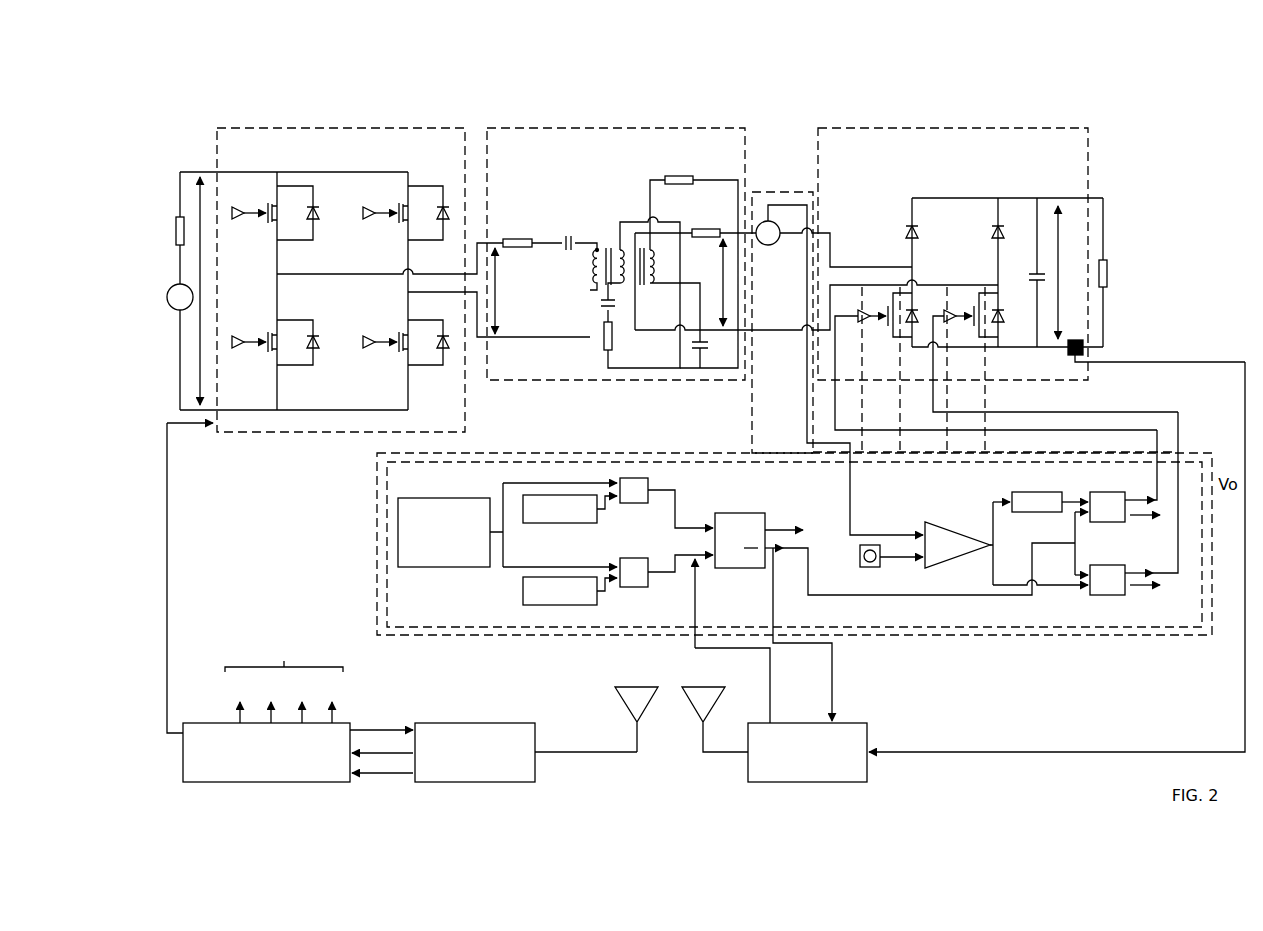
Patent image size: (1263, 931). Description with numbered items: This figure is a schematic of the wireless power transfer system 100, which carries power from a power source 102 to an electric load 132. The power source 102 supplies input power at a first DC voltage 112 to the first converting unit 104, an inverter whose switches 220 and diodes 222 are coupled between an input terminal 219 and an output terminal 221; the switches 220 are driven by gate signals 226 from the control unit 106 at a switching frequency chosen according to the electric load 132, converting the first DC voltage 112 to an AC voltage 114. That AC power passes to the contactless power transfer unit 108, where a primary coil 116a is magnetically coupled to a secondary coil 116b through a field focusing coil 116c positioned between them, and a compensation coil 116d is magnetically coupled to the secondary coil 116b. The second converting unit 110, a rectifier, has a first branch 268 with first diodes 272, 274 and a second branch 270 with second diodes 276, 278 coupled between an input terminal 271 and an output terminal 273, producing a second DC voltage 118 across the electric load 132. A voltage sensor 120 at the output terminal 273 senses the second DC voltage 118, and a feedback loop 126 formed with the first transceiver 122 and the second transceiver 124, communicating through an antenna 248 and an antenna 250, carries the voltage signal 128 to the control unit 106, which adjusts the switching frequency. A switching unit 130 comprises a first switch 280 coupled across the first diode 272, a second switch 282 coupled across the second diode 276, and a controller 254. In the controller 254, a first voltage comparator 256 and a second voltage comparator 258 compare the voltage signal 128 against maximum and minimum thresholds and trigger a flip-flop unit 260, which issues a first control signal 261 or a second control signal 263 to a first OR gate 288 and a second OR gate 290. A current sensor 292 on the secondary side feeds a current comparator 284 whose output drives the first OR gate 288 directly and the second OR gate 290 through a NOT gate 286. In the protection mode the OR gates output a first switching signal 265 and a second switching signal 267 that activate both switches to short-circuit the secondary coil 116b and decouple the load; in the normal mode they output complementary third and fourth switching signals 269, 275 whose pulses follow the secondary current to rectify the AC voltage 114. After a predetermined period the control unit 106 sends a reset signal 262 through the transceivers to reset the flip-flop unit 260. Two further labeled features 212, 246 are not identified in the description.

The wireless power transfer system 100 is at (1162, 96).
The power source 102 is at (170, 290).
The first converting unit 104 is at (343, 128).
The control unit 106 is at (183, 763).
The contactless power transfer unit 108 is at (623, 128).
The second converting unit 110 is at (956, 128).
The first DC voltage 112 is at (199, 352).
The AC voltage 114 is at (498, 292).
The primary coil 116a is at (592, 262).
The secondary coil 116b is at (618, 248).
The field focusing coil 116c is at (594, 287).
The compensation coil 116d is at (655, 272).
The second DC voltage 118 is at (1057, 208).
The voltage sensor 120 is at (1085, 342).
The first transceiver 122 is at (868, 778).
The second transceiver 124 is at (537, 778).
The feedback loop 126 is at (1062, 757).
The voltage signal 128 is at (945, 750).
The switching unit 130 is at (378, 545).
The electric load 132 is at (1107, 268).
The current sensor 212 is at (772, 192).
The input terminal 219 is at (206, 170).
The switches 220 is at (270, 223).
The output terminal 221 is at (408, 291).
The diodes 222 is at (318, 221).
The gate signals 226 is at (284, 680).
The output voltage signal to control unit 246 is at (408, 757).
The antenna 248 is at (697, 686).
The antenna 250 is at (630, 686).
The controller 254 is at (377, 500).
The first voltage comparator 256 is at (650, 483).
The second voltage comparator 258 is at (648, 562).
The flip-flop unit 260 is at (742, 513).
The first control signal 261 is at (785, 528).
The reset signal 262 is at (773, 692).
The second control signal 263 is at (783, 551).
The first switching signal 265 is at (1161, 586).
The second switching signal 267 is at (1150, 498).
The first branch 268 is at (996, 214).
The third switching signal 269 is at (1160, 590).
The second branch 270 is at (911, 215).
The input terminal 271 is at (890, 290).
The first diode 272 is at (1004, 315).
The output terminal 273 is at (1012, 198).
The first diode 274 is at (1004, 235).
The fourth switching signal 275 is at (1128, 516).
The second diode 276 is at (916, 312).
The second diode 278 is at (920, 233).
The first switch 280 is at (963, 300).
The second switch 282 is at (880, 312).
The current comparator 284 is at (968, 537).
The NOT gate 286 is at (1030, 492).
The first OR gate 288 is at (1103, 595).
The second OR gate 290 is at (1098, 492).
The current sensor 292 is at (760, 222).